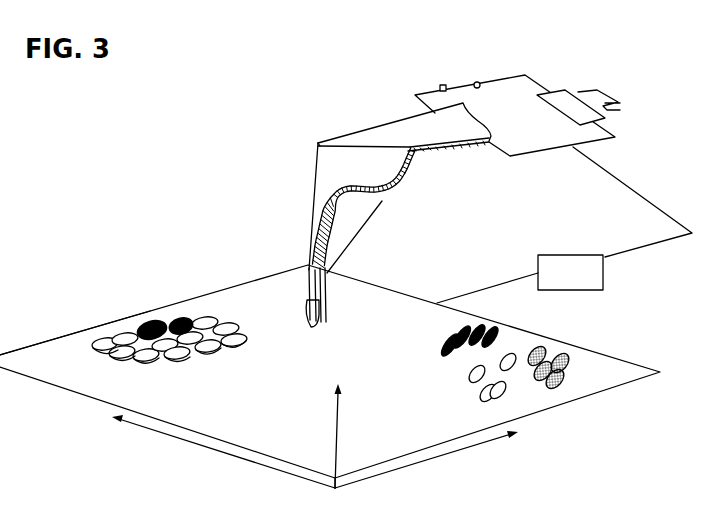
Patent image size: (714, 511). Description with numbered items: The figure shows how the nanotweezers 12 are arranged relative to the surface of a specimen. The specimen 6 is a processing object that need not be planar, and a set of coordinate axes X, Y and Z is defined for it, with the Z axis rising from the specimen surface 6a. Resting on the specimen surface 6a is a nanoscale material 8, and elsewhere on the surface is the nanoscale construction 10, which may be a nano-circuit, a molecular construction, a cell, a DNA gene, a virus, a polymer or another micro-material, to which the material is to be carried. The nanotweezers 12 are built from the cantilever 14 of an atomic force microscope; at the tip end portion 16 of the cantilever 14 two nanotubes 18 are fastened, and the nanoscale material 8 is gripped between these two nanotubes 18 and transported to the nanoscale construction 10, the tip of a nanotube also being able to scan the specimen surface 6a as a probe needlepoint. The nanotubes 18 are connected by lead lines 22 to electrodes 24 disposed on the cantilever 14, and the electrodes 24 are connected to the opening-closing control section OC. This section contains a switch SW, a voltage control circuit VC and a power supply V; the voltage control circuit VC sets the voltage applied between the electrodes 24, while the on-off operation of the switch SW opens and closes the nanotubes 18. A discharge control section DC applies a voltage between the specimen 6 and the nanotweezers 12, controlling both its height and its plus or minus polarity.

The specimen 6 is at (258, 430).
The specimen surface 6a is at (90, 377).
The nanoscale material 8 is at (567, 360).
The nanoscale construction 10 is at (133, 337).
The nanotweezers 12 is at (333, 136).
The cantilever 14 is at (407, 125).
The tip end portion 16 is at (330, 183).
The nanotubes 18 is at (308, 280).
The lead lines 22 is at (382, 201).
The electrodes 24 is at (462, 151).
The opening-closing control section OC is at (537, 73).
The switch SW is at (477, 82).
The voltage control circuit VC is at (565, 113).
The power supply V is at (605, 95).
The discharge control section DC is at (520, 279).
The X axis X is at (437, 459).
The Y axis Y is at (213, 449).
The Z axis Z is at (346, 427).